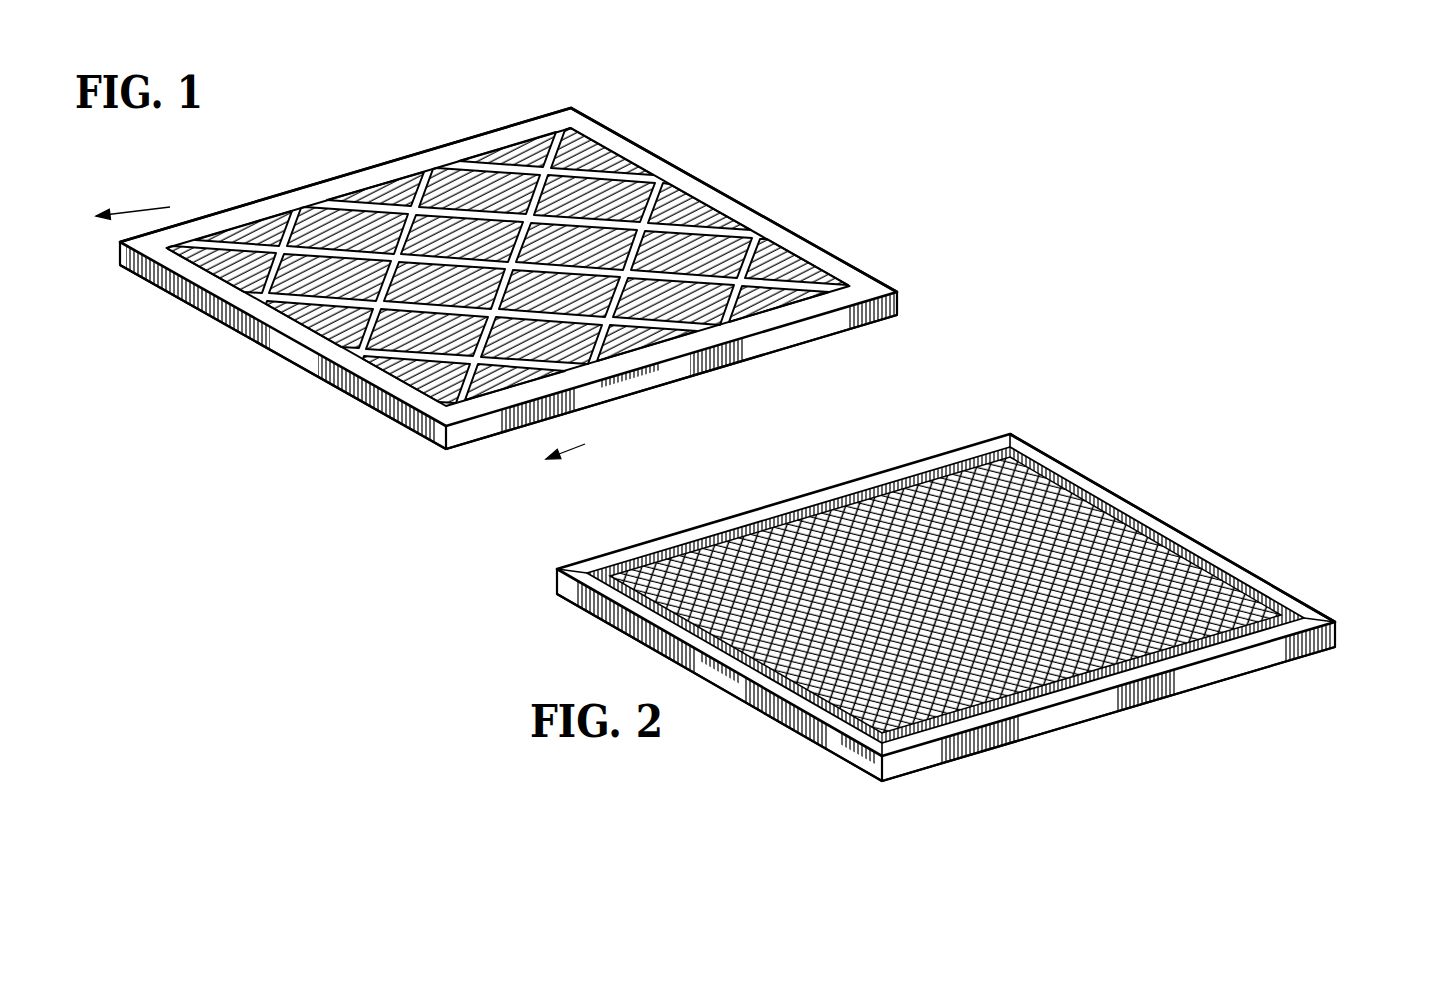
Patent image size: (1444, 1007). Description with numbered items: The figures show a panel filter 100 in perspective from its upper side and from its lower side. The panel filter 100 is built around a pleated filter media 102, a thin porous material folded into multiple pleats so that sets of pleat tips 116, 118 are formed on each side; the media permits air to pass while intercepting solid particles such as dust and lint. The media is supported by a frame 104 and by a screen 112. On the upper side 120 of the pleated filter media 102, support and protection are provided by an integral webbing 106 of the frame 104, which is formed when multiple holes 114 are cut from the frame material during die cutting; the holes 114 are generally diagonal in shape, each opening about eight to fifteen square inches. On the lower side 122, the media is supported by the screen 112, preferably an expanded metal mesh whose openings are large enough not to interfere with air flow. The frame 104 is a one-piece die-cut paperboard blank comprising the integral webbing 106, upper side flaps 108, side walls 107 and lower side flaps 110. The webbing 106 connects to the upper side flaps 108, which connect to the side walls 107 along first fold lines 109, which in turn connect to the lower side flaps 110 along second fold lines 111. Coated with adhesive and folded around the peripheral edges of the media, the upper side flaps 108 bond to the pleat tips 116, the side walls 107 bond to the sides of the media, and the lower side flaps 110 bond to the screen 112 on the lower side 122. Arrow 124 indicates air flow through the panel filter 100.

In FIG. 1, the panel filter 100 is at (935, 161).
In FIG. 2, the panel filter 100 is at (1292, 437).
In FIG. 1, the pleated filter media 102 is at (497, 157).
In FIG. 2, the pleated filter media 102 is at (946, 588).
In FIG. 1, the frame 104 is at (353, 384).
In FIG. 2, the frame 104 is at (1110, 490).
In FIG. 1, the integral webbing 106 is at (748, 260).
In FIG. 1, the side walls 107 is at (508, 349).
In FIG. 2, the side walls 107 is at (876, 760).
In FIG. 1, the upper side flaps 108 is at (252, 210).
In FIG. 1, the first fold lines 109 is at (540, 104).
In FIG. 2, the first fold lines 109 is at (580, 603).
In FIG. 2, the lower side flaps 110 is at (583, 567).
In FIG. 1, the second fold lines 111 is at (403, 432).
In FIG. 2, the second fold lines 111 is at (953, 455).
In FIG. 2, the screen 112 is at (925, 457).
In FIG. 1, the holes 114 is at (680, 205).
In FIG. 1, the pleat tips 116 is at (380, 196).
In FIG. 2, the pleat tips 118 is at (815, 515).
In FIG. 1, the upper side 120 is at (810, 271).
In FIG. 2, the lower side 122 is at (1250, 593).
In FIG. 1, the airflow direction arrow 124 is at (168, 208).